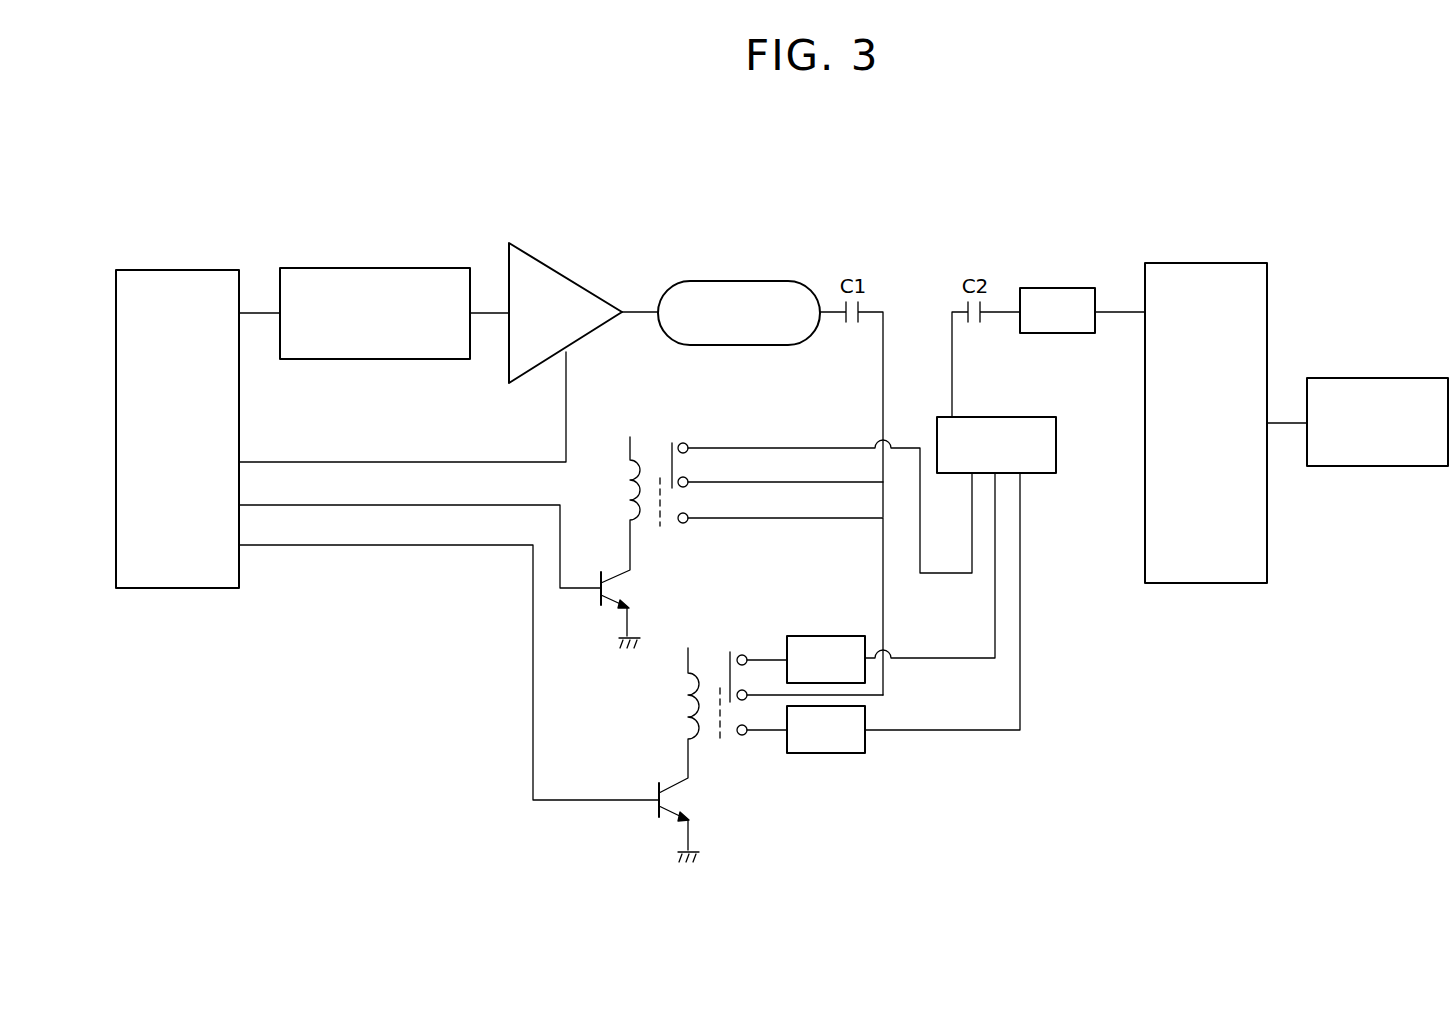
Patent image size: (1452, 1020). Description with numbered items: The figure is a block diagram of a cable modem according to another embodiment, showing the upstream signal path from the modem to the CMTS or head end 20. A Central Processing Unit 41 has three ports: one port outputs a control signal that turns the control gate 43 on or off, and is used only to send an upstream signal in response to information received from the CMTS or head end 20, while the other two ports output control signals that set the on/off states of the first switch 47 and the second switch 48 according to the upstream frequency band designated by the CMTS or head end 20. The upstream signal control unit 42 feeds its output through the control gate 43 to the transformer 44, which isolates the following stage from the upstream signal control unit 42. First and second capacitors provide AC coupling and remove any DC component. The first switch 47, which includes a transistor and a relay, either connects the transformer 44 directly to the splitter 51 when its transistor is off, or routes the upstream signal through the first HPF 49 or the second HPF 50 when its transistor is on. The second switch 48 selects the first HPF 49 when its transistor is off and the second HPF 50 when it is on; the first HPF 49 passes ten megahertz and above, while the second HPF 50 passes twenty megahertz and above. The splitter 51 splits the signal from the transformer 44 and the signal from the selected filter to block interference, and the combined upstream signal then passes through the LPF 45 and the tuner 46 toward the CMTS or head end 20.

The Central Processing Unit (CPU) 41 is at (208, 268).
The upstream signal control unit 42 is at (416, 268).
The control gate 43 is at (588, 288).
The transformer 44 is at (745, 281).
The Low-pass Filter (LPF) 45 is at (1074, 288).
The tuner 46 is at (1234, 263).
The first switch 47 is at (654, 445).
The second switch 48 is at (708, 655).
The first High-pass Filter (HPF) 49 is at (839, 636).
The second HPF 50 is at (835, 753).
The splitter 51 is at (1040, 417).
The CMTS or head end 20 is at (1424, 378).